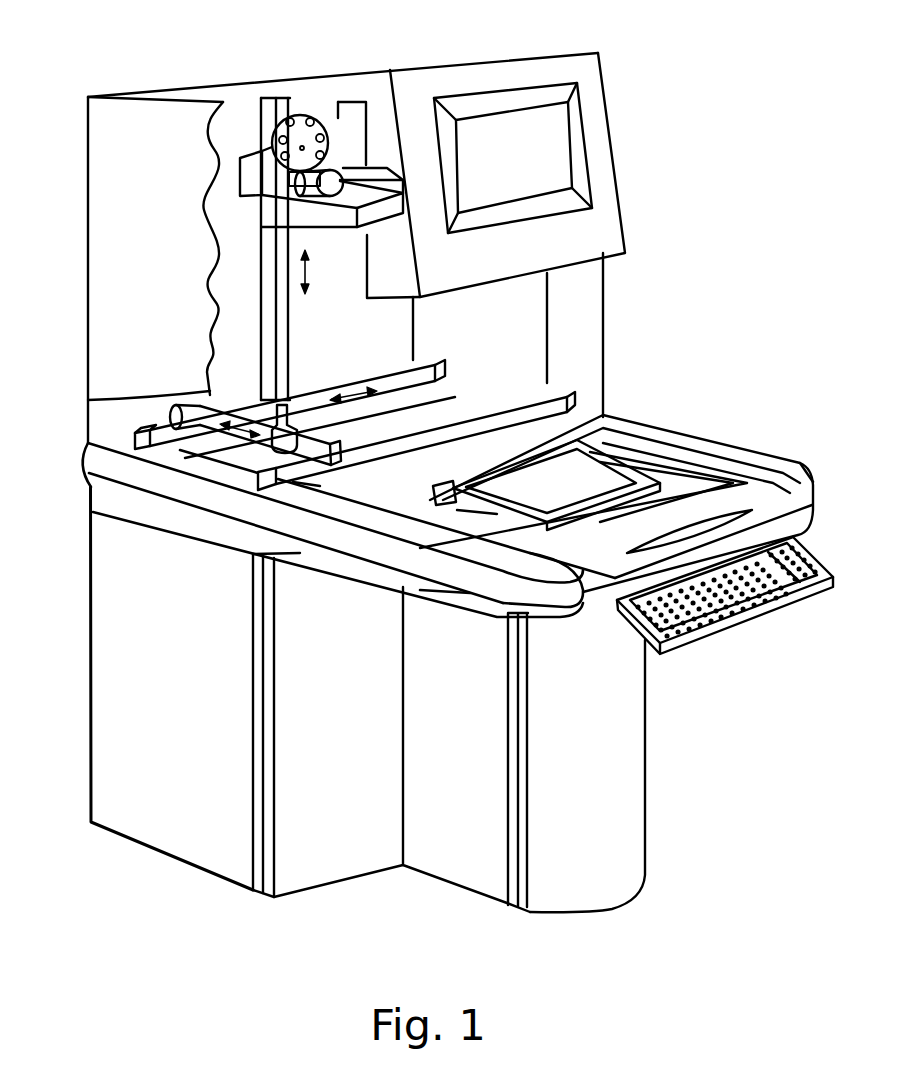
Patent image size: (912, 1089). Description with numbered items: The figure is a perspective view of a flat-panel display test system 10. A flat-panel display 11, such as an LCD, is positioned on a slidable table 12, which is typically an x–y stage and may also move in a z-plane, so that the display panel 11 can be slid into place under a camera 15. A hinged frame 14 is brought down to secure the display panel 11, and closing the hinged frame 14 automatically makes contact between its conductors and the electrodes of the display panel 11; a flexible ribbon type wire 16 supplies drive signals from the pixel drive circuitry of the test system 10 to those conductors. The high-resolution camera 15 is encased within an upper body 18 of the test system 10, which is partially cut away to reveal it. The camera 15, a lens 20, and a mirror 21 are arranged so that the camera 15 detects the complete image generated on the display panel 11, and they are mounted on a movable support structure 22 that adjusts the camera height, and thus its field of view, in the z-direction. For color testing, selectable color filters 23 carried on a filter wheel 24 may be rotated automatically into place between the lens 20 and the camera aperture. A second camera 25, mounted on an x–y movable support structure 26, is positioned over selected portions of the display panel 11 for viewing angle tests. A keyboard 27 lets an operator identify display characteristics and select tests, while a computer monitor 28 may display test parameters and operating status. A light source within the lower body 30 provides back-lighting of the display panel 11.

The flat-panel display test system 10 is at (236, 69).
The flat-panel display 11 is at (553, 485).
The slidable table 12 is at (683, 493).
The hinged frame 14 is at (620, 486).
The camera 15 is at (244, 179).
The flexible ribbon type wire 16 is at (468, 505).
The upper body 18 is at (98, 268).
The lens 20 is at (332, 172).
The mirror 21 is at (345, 195).
The movable support structure 22 is at (270, 310).
The color filters 23 is at (313, 115).
The filter wheel 24 is at (368, 167).
The second camera 25 is at (292, 410).
The x–y movable support structure 26 is at (209, 413).
The keyboard 27 is at (793, 560).
The computer monitor 28 is at (537, 143).
The lower body 30 is at (180, 653).